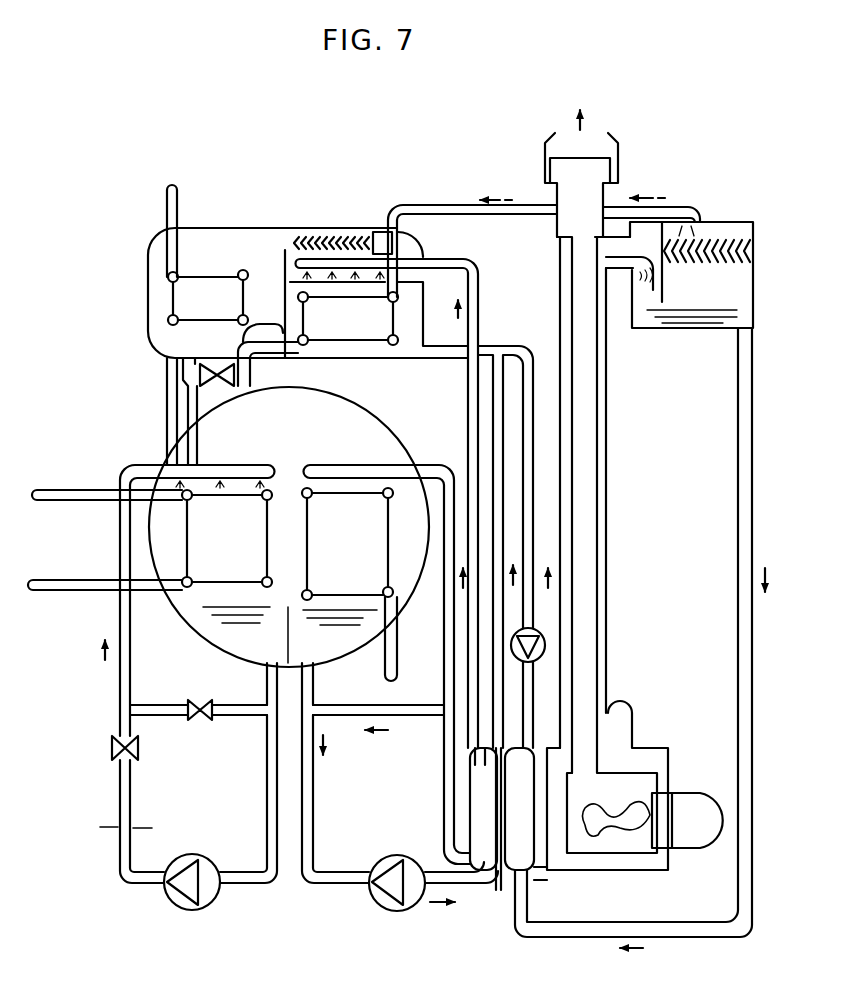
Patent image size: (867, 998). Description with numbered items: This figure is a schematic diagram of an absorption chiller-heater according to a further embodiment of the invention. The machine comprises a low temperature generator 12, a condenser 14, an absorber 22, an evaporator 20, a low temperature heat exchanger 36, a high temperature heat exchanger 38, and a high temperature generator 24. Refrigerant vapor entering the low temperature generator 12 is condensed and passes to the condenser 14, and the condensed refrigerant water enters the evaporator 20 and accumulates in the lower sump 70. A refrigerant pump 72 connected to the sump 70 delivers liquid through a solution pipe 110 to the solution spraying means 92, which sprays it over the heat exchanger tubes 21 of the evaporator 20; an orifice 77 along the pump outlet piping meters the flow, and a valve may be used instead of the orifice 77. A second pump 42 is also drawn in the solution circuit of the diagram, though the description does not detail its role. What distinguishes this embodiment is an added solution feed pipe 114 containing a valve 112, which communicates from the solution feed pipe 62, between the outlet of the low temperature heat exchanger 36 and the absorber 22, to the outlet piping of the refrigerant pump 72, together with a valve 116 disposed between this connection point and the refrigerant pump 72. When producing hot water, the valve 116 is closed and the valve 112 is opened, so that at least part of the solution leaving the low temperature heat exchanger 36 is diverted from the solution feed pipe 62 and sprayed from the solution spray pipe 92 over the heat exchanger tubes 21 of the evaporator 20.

The low temperature generator 12 is at (340, 317).
The condenser 14 is at (213, 292).
The evaporator 20 is at (220, 555).
The heat exchanger tubes 21 is at (275, 490).
The absorber 22 is at (347, 578).
The high temperature generator 24 is at (650, 745).
The low temperature heat exchanger 36 is at (482, 807).
The high temperature heat exchanger 38 is at (517, 837).
The pump 42 is at (392, 906).
The solution feed pipe 62 is at (447, 657).
The sump 70 is at (227, 635).
The refrigerant pump 72 is at (188, 908).
The orifice 77 is at (112, 830).
The solution spraying means 92 is at (212, 467).
The solution pipe 110 is at (120, 685).
The valve 112 is at (190, 730).
The solution feed pipe 114 is at (342, 717).
The valve 116 is at (118, 753).